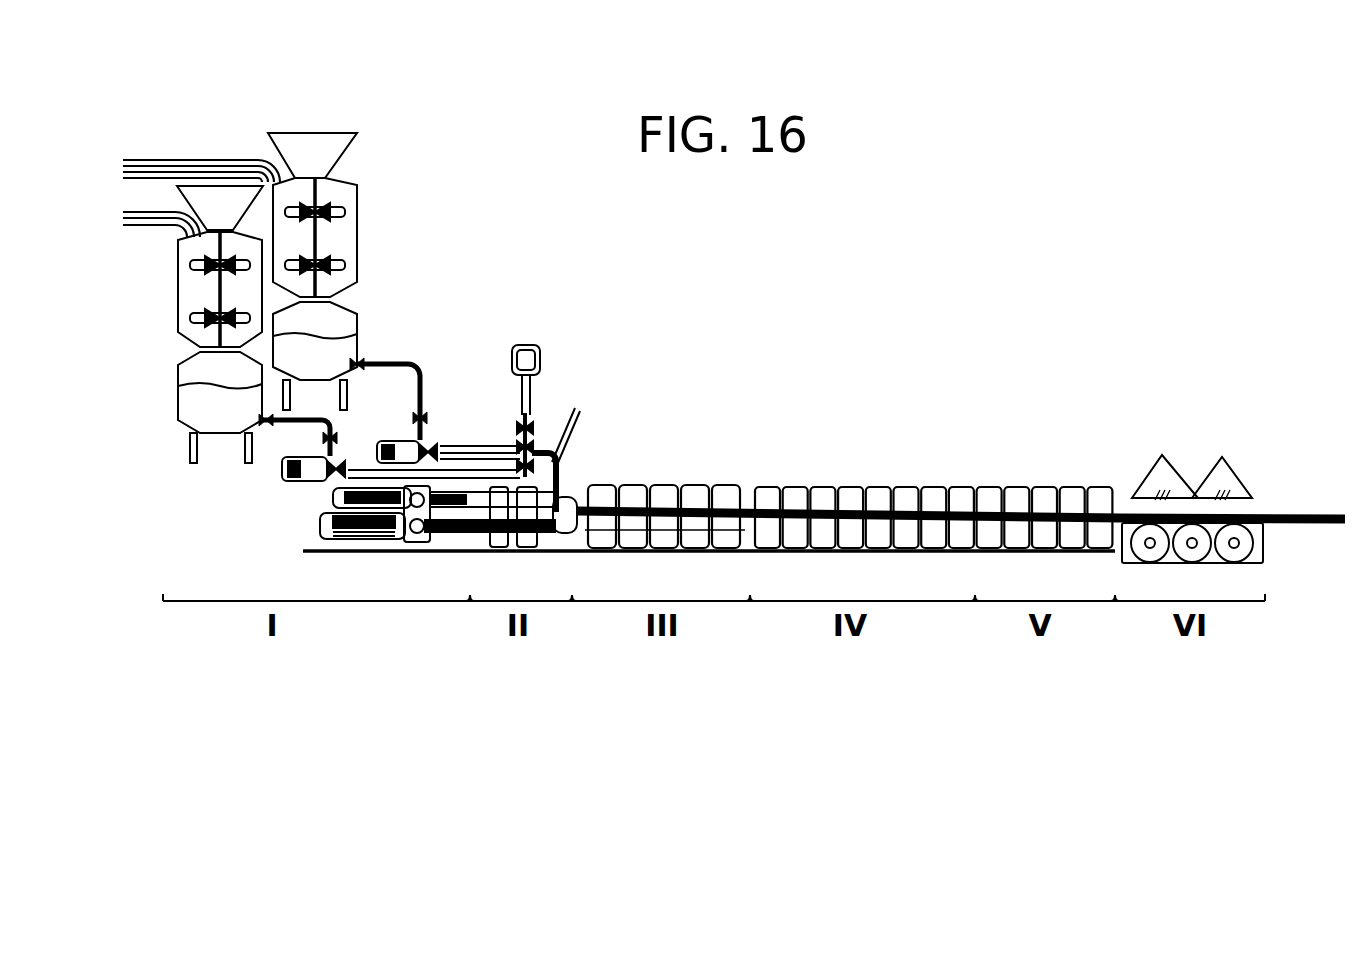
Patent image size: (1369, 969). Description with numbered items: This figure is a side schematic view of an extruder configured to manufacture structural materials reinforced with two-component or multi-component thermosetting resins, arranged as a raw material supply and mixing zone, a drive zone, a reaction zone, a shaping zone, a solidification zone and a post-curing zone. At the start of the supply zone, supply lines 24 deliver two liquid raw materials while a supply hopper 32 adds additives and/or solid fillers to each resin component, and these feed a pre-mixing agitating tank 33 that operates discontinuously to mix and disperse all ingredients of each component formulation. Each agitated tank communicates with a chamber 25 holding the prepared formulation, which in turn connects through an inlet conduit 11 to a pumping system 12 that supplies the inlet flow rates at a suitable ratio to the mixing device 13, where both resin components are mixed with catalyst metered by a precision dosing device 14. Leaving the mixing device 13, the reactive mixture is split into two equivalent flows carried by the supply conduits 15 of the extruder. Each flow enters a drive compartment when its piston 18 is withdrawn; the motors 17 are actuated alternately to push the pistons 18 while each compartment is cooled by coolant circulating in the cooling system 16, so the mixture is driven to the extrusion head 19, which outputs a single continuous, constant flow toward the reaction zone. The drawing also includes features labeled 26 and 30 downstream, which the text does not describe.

The inlet conduit 11 is at (308, 413).
The pumping system 12 is at (387, 440).
The mixing device 13 is at (515, 448).
The precision dosing device 14 is at (525, 345).
The supply conduits 15 is at (576, 416).
The cooling system 16 is at (997, 487).
The motors 17 is at (312, 526).
The piston 18 is at (450, 533).
The extrusion head 19 is at (568, 503).
The supply lines 24 is at (178, 166).
The chamber 25 is at (238, 377).
The conveyor 26 is at (857, 487).
The material piles 30 is at (1218, 470).
The supply hopper 32 is at (312, 155).
The pre-mixing agitating tank 33 is at (243, 282).